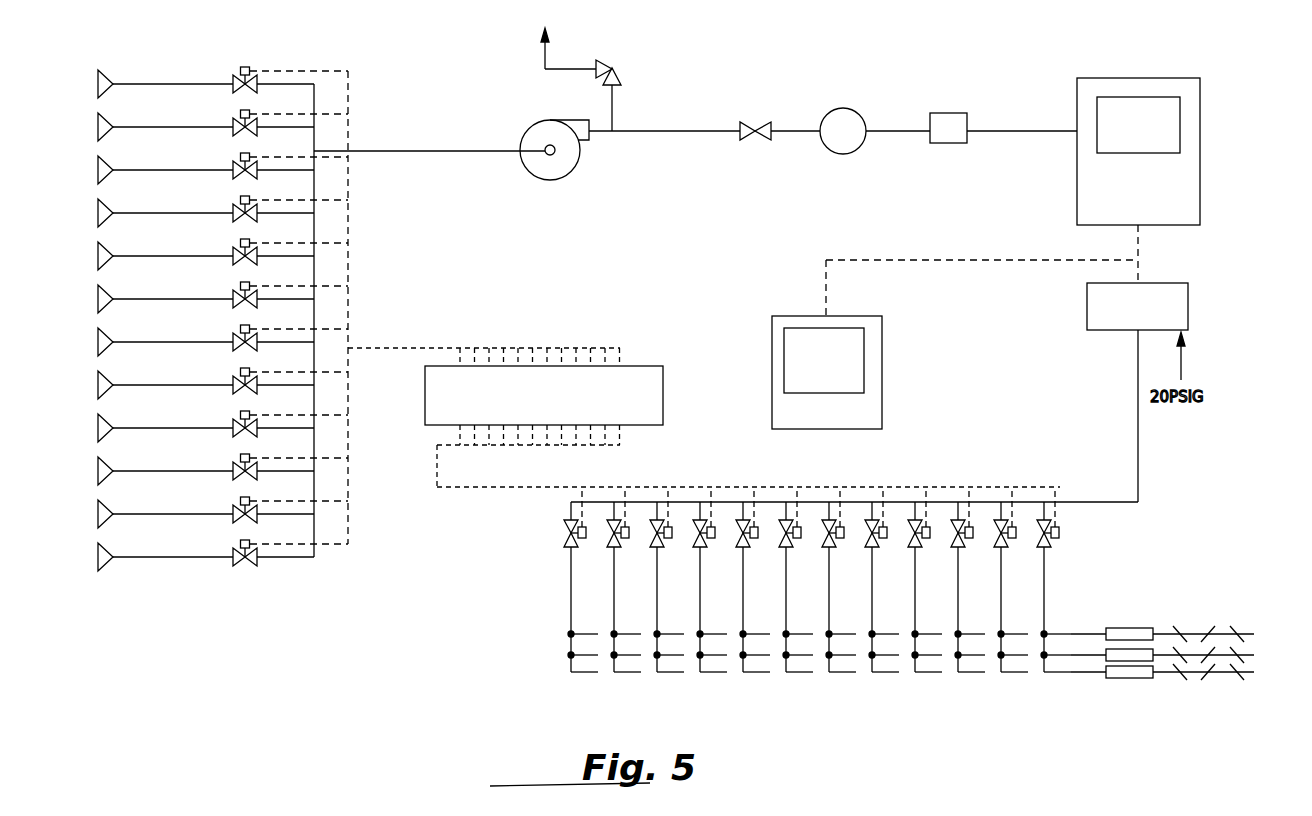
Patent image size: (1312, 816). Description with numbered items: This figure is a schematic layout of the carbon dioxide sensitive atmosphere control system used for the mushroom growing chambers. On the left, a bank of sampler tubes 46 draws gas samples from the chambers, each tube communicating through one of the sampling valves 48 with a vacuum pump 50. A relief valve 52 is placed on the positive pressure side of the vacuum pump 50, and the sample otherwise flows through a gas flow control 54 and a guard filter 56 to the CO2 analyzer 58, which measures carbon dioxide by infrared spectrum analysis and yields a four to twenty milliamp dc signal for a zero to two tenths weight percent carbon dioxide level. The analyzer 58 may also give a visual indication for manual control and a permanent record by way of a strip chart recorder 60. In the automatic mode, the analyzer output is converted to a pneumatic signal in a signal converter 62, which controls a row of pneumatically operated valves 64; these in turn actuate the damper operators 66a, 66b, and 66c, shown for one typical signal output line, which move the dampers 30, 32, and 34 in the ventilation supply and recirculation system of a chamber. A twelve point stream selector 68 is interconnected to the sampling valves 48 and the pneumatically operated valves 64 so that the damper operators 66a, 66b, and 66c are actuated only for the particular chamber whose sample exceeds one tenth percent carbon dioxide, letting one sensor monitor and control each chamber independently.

The damper 30 is at (1250, 656).
The damper 32 is at (1192, 630).
The damper 34 is at (1220, 673).
The sampler tubes 46 is at (178, 85).
The sampling valves 48 is at (233, 130).
The vacuum pump 50 is at (570, 160).
The relief valve 52 is at (622, 75).
The gas flow control 54 is at (846, 113).
The guard filter 56 is at (952, 118).
The CO2 analyzer 58 is at (1138, 78).
The strip chart recorder 60 is at (777, 351).
The signal converter 62 is at (1172, 295).
The pneumatically operated valves 64 is at (789, 546).
The damper operator 66a is at (1140, 628).
The damper operator 66b is at (1122, 661).
The damper operator 66c is at (1140, 678).
The stream selector 68 is at (640, 372).